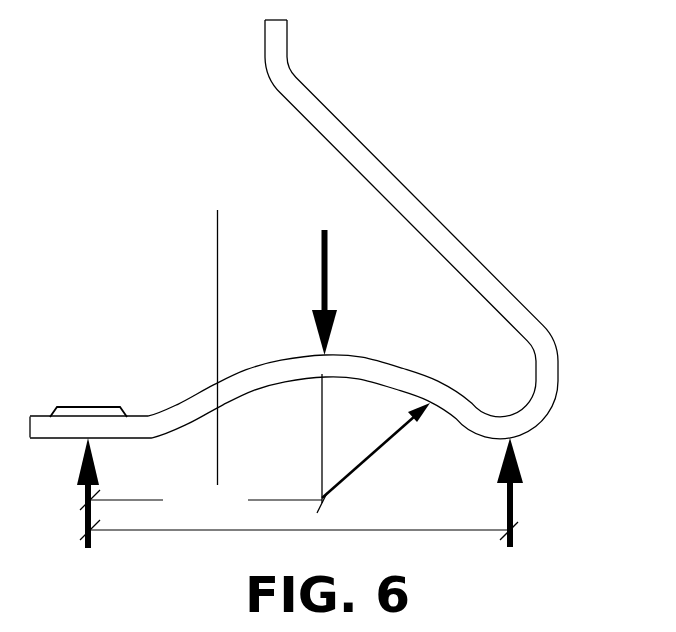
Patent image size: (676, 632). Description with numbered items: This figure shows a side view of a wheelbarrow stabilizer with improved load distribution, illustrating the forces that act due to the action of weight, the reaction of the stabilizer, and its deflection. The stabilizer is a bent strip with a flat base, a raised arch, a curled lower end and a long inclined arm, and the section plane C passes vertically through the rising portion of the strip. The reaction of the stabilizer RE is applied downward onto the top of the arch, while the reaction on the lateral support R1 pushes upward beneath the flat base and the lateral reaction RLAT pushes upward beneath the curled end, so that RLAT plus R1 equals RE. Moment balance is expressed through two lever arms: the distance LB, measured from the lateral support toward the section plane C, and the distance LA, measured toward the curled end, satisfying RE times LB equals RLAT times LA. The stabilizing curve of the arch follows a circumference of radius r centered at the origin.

The section line C- C is at (195, 237).
The reaction of the stabilizer RE is at (304, 282).
The reaction on the lateral support R1 is at (67, 497).
The lateral reaction RLAT is at (538, 494).
The lever arm L_A LA is at (299, 461).
The lever arm L_B LB is at (152, 500).
The radius of the stabilizing curve r is at (376, 450).